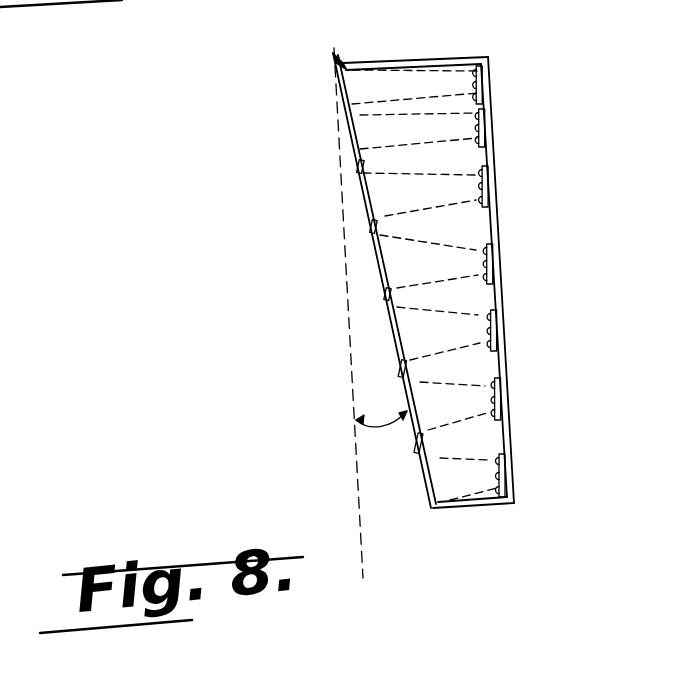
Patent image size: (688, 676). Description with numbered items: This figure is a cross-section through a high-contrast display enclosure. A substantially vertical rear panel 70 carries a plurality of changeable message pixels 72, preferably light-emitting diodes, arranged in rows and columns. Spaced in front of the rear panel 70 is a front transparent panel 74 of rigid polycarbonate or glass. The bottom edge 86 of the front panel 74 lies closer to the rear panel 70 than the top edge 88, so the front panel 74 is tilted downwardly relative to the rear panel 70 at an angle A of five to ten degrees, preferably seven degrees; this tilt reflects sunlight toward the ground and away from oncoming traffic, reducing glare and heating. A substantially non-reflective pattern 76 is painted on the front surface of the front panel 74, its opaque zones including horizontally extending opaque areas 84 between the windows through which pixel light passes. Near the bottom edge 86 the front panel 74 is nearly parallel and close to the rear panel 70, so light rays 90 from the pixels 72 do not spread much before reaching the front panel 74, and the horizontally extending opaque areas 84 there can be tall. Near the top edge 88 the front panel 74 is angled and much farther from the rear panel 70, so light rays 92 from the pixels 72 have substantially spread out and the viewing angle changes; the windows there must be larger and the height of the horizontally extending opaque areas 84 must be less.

The rear panel 70 is at (498, 172).
The changeable message pixels 72 is at (476, 186).
The front transparent panel 74 is at (428, 499).
The non-reflective pattern 76 is at (432, 59).
The horizontally extending opaque areas 84 is at (403, 370).
The bottom edge 86 is at (460, 509).
The top edge 88 is at (333, 53).
The light rays 90 is at (476, 460).
The light rays 92 is at (437, 143).
The angle A is at (383, 418).